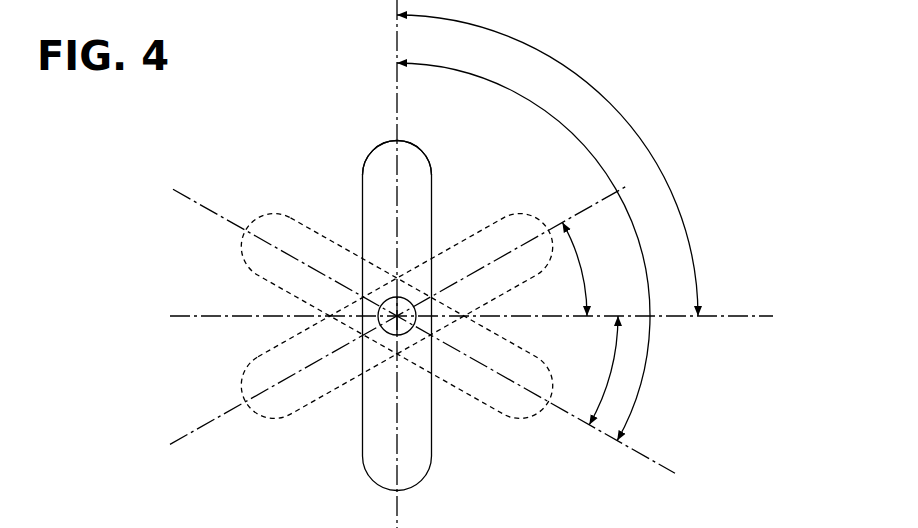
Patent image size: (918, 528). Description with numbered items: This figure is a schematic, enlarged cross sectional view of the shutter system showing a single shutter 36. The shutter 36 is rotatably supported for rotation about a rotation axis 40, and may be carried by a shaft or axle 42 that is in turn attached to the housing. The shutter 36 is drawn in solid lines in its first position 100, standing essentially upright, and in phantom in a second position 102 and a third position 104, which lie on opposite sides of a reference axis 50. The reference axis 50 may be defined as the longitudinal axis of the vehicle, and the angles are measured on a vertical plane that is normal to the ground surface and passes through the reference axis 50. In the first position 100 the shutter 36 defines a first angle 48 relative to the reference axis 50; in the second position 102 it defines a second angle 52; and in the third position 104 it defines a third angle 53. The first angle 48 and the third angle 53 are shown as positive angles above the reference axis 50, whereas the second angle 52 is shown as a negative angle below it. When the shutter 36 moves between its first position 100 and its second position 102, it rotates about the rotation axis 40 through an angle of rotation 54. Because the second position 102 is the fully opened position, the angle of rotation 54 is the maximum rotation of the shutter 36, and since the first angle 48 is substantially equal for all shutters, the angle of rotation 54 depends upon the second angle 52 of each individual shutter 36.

The shutter 36 is at (373, 181).
The rotation axis 40 is at (386, 303).
The shaft or axle 42 is at (386, 334).
The first angle 48 is at (548, 55).
The reference axis 50 is at (744, 318).
The second angle 52 is at (609, 377).
The third angle 53 is at (583, 277).
The angle of rotation 54 is at (586, 147).
The first position 100 is at (413, 138).
The second position 102 is at (476, 408).
The third position 104 is at (489, 220).